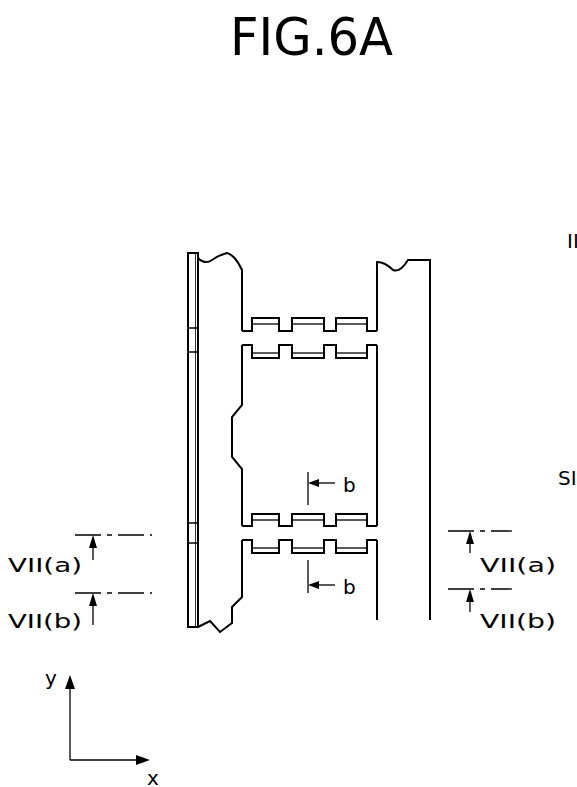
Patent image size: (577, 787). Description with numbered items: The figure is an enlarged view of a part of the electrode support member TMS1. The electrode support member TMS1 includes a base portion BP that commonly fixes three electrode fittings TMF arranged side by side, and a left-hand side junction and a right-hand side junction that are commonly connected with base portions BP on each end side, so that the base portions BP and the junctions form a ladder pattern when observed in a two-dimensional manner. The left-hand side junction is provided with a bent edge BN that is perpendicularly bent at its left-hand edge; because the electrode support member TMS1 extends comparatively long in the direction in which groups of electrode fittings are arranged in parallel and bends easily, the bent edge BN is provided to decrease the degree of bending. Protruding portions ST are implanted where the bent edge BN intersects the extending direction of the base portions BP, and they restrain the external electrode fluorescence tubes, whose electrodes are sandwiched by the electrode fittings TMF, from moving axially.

The electrode support member TMS1 is at (175, 226).
The bent edge BN is at (193, 292).
The protruding portion ST is at (193, 340).
The base portion BP is at (365, 337).
The electrode fitting TMF is at (268, 317).